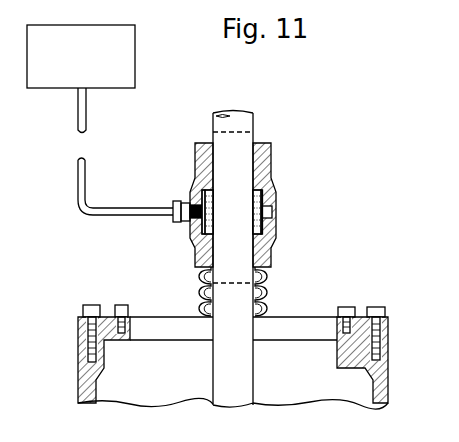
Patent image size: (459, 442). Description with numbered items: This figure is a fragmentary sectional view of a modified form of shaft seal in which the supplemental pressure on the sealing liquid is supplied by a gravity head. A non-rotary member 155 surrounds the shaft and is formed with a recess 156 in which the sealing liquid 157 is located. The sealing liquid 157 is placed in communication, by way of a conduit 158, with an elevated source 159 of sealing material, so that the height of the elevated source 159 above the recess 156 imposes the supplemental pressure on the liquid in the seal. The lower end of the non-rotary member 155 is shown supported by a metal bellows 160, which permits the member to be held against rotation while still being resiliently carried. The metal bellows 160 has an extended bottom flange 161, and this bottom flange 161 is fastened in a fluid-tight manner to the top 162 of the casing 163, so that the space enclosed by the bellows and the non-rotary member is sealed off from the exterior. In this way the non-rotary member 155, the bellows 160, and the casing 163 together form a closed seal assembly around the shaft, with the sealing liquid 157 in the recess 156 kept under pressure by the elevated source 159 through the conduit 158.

The non-rotary member 155 is at (272, 147).
The recess 156 is at (259, 218).
The sealing liquid 157 is at (258, 201).
The conduit 158 is at (86, 163).
The elevated source of sealing material 159 is at (135, 48).
The metal bellows 160 is at (272, 290).
The bottom flange 161 is at (300, 313).
The top of the casing 162 is at (112, 342).
The casing 163 is at (373, 387).